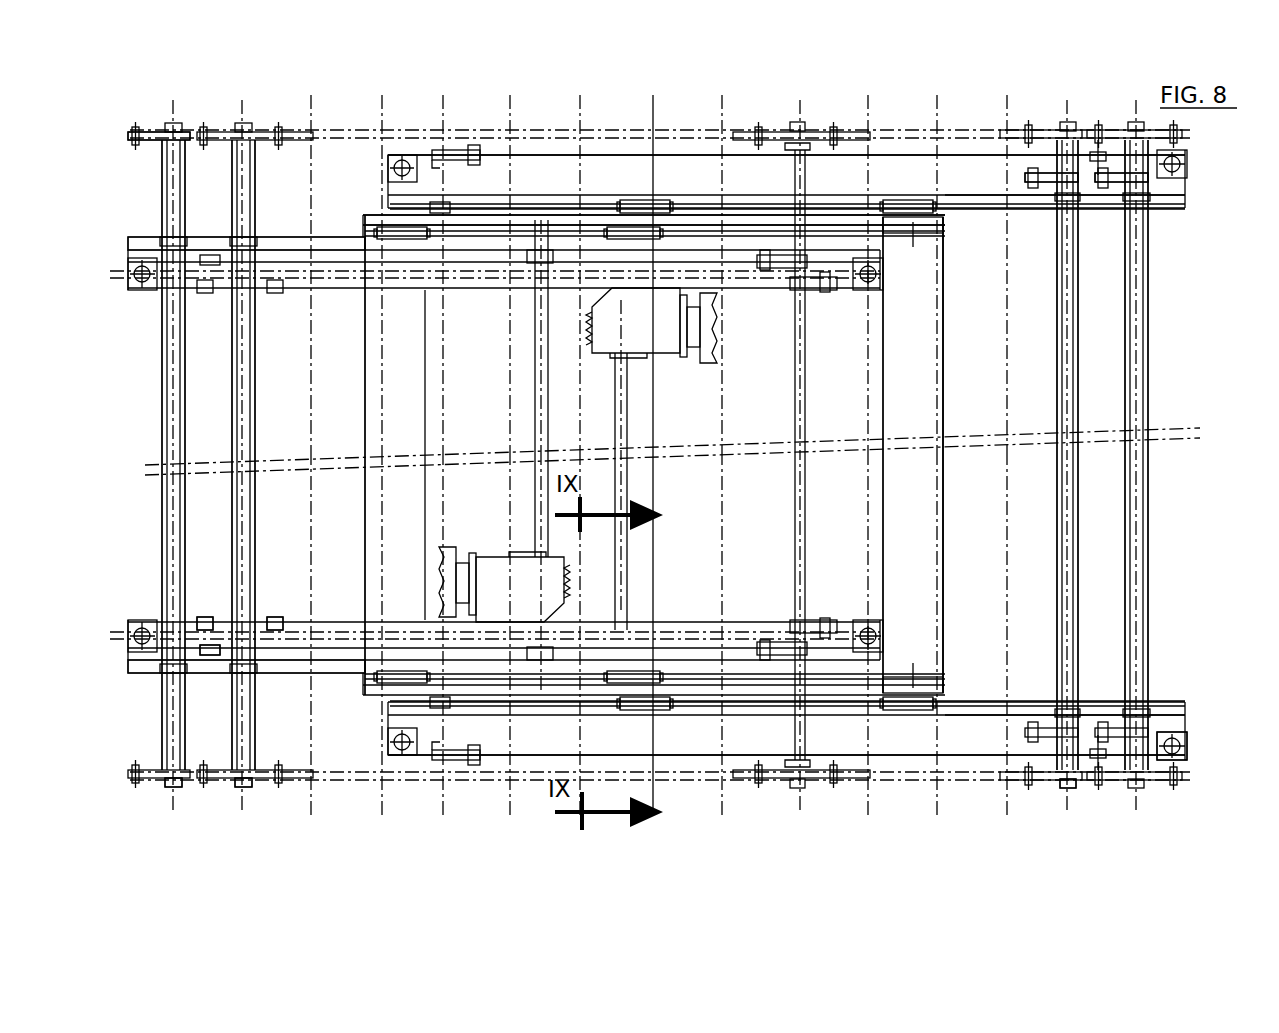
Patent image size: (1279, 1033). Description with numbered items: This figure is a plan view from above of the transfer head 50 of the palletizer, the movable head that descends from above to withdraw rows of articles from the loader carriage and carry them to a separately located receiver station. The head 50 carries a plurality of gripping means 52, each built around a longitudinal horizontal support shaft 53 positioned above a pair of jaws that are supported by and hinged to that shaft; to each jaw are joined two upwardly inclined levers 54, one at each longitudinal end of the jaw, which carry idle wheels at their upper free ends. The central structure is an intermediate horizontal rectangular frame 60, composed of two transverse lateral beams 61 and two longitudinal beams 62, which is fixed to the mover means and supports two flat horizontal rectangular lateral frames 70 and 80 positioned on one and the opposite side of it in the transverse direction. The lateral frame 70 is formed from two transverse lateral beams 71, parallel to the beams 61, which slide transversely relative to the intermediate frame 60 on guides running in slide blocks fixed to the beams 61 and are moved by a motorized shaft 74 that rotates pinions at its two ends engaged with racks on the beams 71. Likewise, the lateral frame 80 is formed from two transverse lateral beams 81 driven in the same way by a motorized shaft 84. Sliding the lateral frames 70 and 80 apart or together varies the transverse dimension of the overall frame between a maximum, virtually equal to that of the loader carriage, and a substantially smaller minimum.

The transfer head 50 is at (162, 123).
The gripping means 52 is at (160, 437).
The longitudinal horizontal support shaft 53 is at (173, 787).
The upwardly inclined levers 54 is at (1045, 185).
The intermediate horizontal rectangular frame 60 is at (950, 392).
The transverse lateral beams 61 is at (492, 218).
The longitudinal beams 62 is at (372, 372).
The lateral frame 70 is at (1190, 727).
The transverse lateral beams 71 is at (975, 170).
The motorized shaft 74 is at (618, 395).
The lateral frame 80 is at (318, 232).
The transverse lateral beams 81 is at (150, 240).
The motorized shaft 84 is at (535, 393).